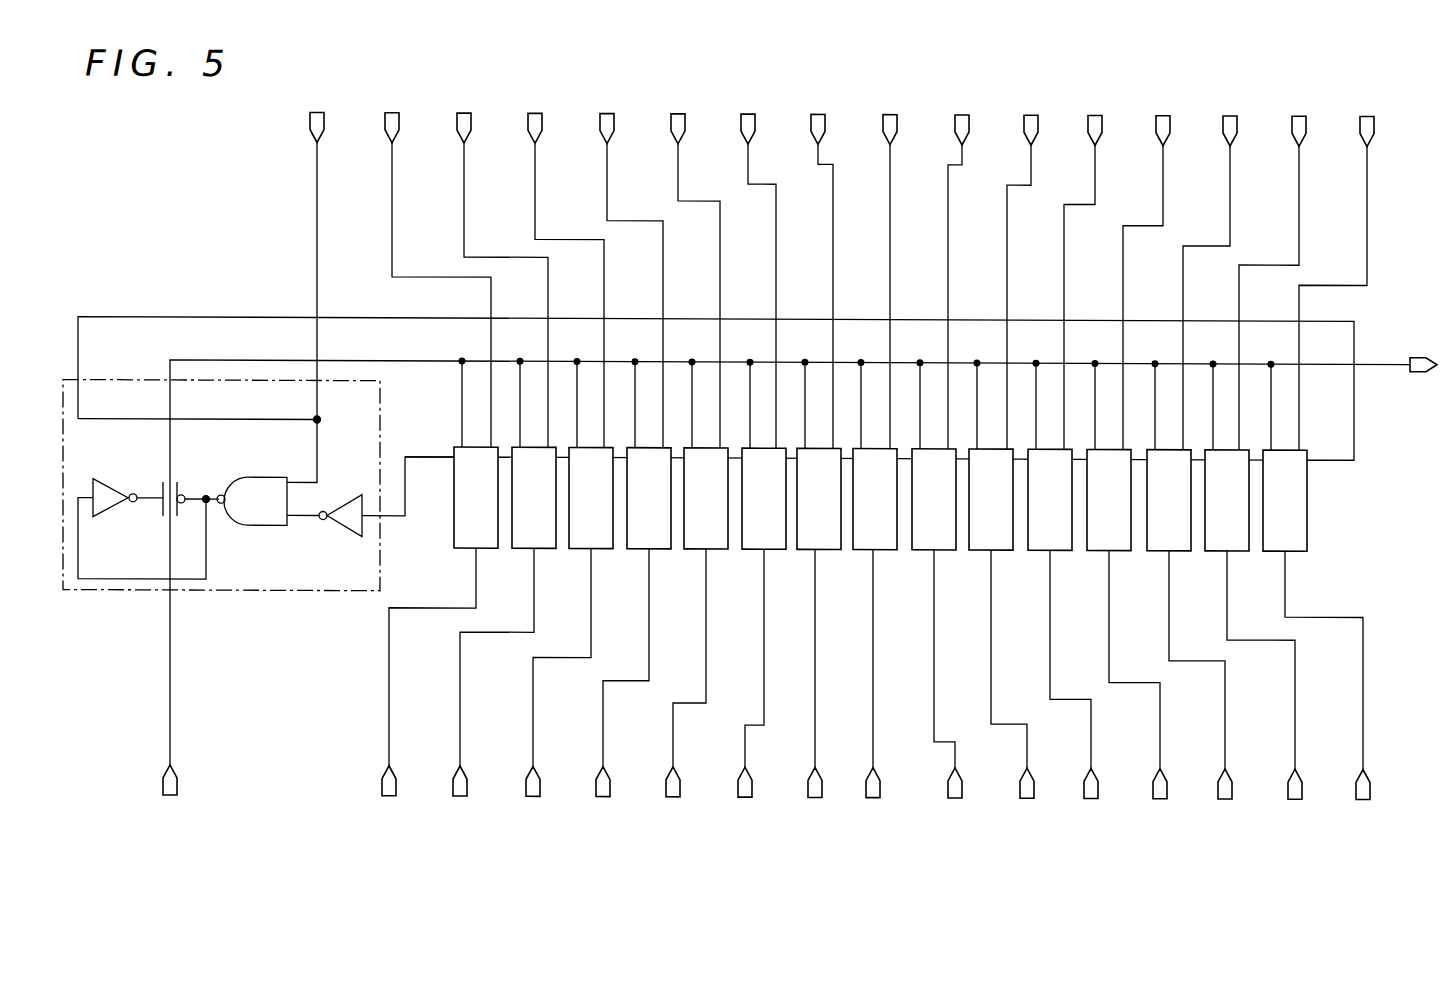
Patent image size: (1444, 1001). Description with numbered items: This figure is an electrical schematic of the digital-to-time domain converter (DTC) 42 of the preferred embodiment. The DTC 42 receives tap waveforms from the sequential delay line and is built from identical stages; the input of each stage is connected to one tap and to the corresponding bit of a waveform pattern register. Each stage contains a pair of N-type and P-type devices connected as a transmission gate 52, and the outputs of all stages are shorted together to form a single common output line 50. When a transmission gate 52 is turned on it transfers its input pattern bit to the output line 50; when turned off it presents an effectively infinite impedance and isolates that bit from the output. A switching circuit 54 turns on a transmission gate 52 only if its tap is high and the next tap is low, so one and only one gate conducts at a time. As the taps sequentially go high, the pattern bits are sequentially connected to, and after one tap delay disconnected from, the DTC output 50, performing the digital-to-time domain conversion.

The digital-to-time domain converter 42 is at (293, 250).
The common output line 50 is at (1385, 363).
The transmission gate 52 is at (879, 499).
The switching circuit 54 is at (178, 477).